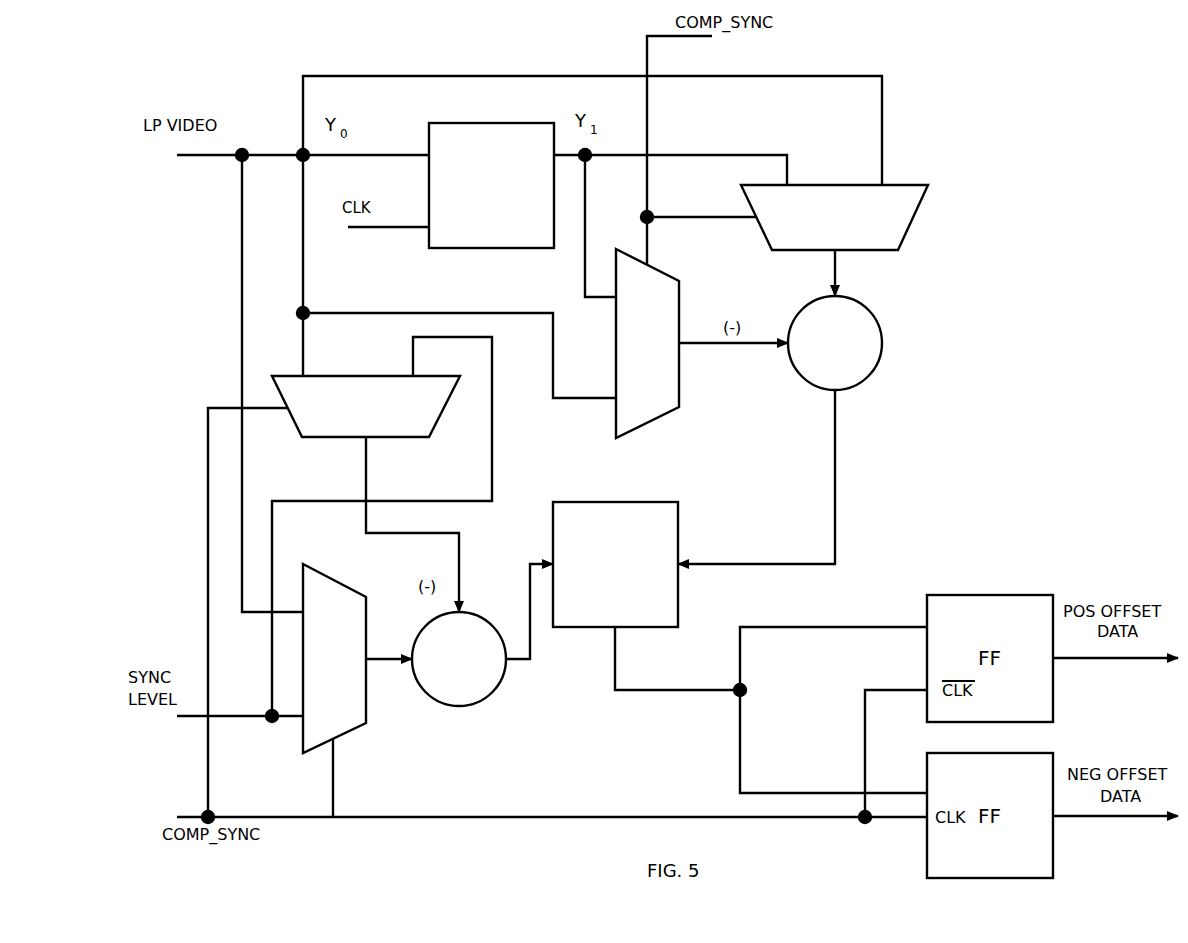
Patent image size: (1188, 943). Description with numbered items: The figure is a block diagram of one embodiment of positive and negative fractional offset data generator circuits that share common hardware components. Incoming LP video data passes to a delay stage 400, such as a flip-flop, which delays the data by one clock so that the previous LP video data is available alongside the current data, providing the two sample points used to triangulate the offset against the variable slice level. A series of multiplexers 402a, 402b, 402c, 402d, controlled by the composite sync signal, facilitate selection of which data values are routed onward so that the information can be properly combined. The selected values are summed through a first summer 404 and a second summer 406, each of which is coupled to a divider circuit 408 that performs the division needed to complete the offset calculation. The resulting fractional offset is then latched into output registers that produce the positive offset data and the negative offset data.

The delay stage 400 is at (473, 123).
The multiplexer 402a is at (377, 438).
The multiplexer 402b is at (313, 572).
The multiplexer 402c is at (908, 236).
The multiplexer 402d is at (710, 313).
The summer 404 is at (457, 706).
The summer 406 is at (882, 343).
The divider circuit 408 is at (678, 532).